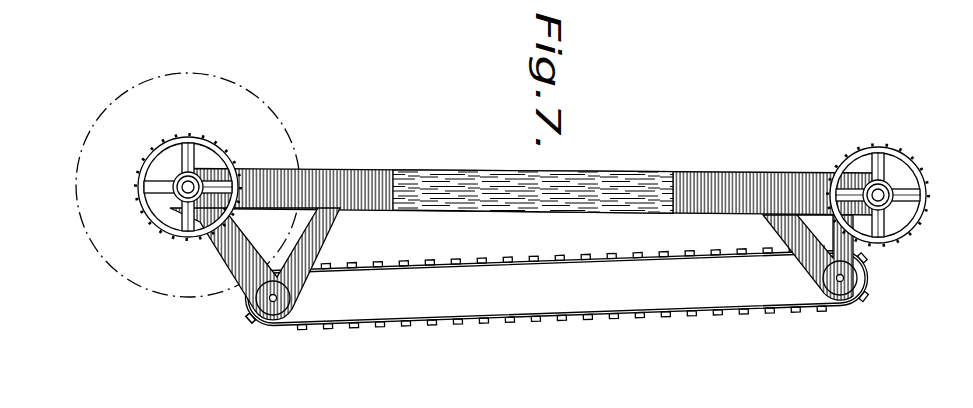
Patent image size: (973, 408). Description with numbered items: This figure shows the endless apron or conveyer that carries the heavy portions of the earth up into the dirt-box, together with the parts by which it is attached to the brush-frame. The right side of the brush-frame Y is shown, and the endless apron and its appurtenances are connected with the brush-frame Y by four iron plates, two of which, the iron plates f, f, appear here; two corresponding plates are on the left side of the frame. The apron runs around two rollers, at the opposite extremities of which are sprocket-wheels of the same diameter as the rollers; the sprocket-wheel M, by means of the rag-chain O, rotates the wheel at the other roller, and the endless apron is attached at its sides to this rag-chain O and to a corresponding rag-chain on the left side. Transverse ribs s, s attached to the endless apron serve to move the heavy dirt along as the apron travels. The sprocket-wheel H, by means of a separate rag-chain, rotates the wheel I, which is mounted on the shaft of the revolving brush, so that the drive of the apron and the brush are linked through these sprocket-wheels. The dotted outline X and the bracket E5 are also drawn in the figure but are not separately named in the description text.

The driving wheel outline X is at (76, 181).
The wheel I is at (165, 237).
The sprocket-wheel H is at (919, 227).
The iron plates f is at (345, 168).
The brush-frame Y is at (574, 211).
The rag-chain O is at (570, 336).
The transverse ribs s is at (556, 287).
The sprocket-wheel M is at (296, 304).
The roller bracket E5 is at (879, 273).